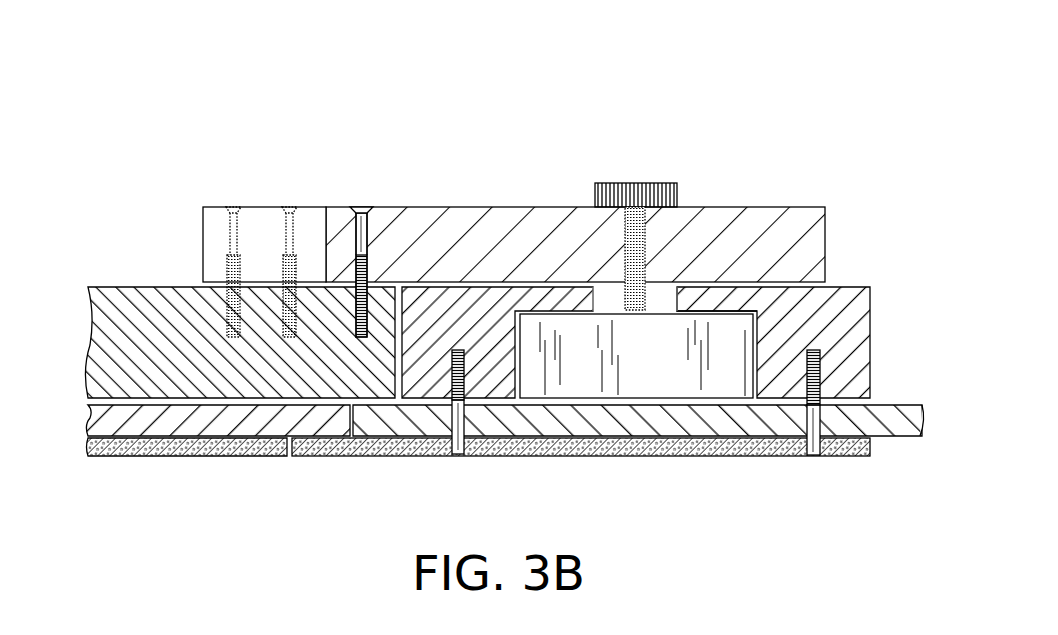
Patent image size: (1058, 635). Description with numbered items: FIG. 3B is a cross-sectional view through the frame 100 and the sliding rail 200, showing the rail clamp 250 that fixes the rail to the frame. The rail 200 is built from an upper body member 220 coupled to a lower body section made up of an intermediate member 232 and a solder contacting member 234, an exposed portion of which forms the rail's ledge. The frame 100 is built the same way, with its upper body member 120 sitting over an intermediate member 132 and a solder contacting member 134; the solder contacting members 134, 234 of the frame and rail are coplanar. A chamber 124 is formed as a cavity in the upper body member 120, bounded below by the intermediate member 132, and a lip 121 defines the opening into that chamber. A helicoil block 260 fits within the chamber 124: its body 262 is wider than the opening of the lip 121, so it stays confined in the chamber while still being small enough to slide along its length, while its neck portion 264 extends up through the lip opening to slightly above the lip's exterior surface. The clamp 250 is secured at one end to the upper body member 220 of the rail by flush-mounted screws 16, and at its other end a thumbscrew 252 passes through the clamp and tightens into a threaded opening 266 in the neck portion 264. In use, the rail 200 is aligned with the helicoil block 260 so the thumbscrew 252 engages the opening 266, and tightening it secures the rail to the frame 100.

The frame 100 is at (748, 60).
The sliding rail 200 is at (157, 131).
The screws 16 is at (358, 207).
The upper body member 220 is at (123, 287).
The rail clamp 250 is at (787, 189).
The thumbscrew 252 is at (634, 183).
The threaded opening 266 is at (620, 300).
The neck portion 264 is at (681, 302).
The lip 121 is at (587, 303).
The upper body member 120 is at (857, 333).
The helicoil block 260 is at (683, 390).
The body 262 is at (555, 390).
The intermediate member 232 is at (135, 425).
The solder contacting member 234 is at (226, 445).
The solder contacting member 134 is at (372, 445).
The chamber 124 is at (748, 402).
The intermediate member 132 is at (890, 437).